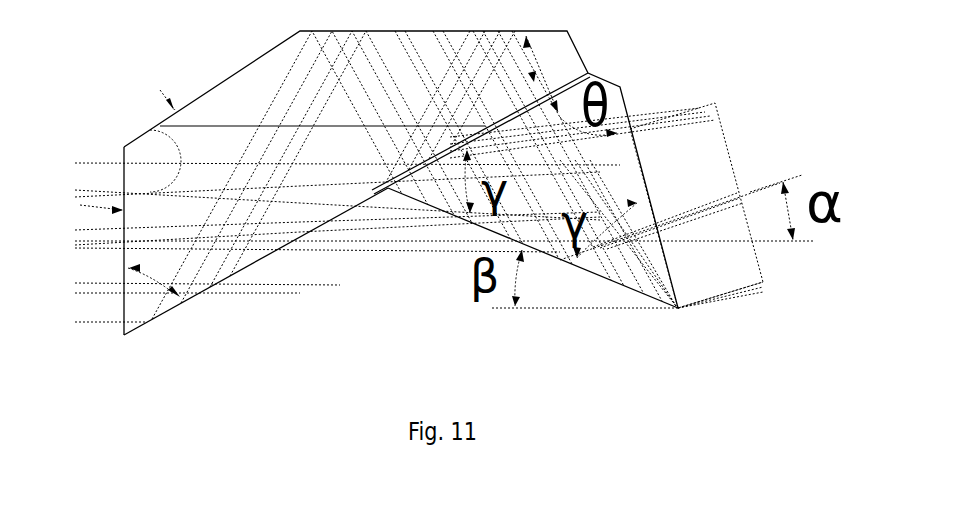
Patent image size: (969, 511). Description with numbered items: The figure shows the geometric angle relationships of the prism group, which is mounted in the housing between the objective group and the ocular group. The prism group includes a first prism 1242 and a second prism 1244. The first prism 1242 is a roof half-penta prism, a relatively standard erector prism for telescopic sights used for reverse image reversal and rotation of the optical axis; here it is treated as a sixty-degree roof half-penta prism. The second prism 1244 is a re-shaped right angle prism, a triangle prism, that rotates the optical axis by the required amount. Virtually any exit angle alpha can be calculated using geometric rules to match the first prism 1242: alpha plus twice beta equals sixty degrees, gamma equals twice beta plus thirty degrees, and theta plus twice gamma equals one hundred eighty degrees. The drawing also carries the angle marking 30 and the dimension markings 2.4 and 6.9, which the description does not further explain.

The first prism 1242 is at (277, 242).
The second prism 1244 is at (423, 202).
The mirror tilt angle (30 degrees) 30 is at (549, 72).
The dimension 2.4 is at (161, 141).
The dimension 6.9 is at (154, 267).